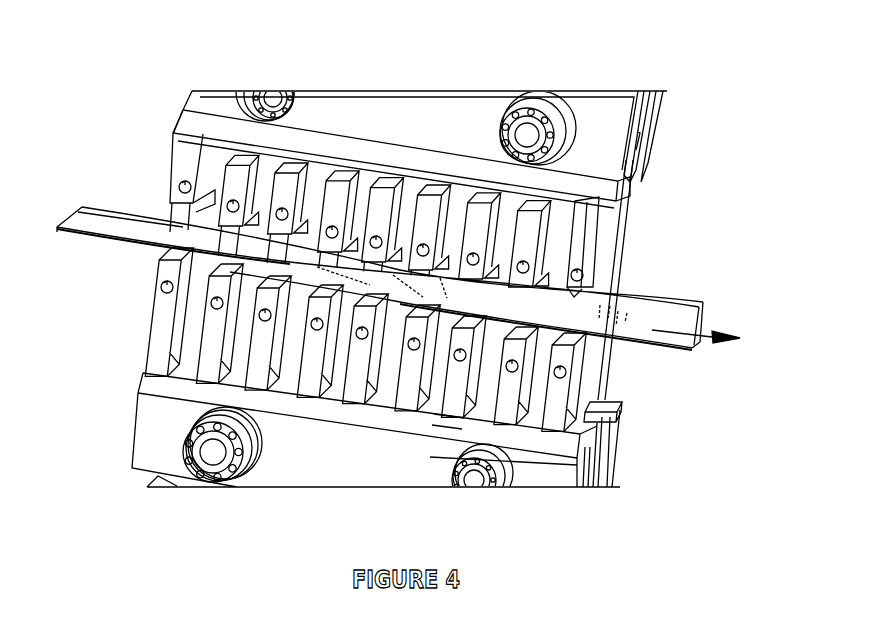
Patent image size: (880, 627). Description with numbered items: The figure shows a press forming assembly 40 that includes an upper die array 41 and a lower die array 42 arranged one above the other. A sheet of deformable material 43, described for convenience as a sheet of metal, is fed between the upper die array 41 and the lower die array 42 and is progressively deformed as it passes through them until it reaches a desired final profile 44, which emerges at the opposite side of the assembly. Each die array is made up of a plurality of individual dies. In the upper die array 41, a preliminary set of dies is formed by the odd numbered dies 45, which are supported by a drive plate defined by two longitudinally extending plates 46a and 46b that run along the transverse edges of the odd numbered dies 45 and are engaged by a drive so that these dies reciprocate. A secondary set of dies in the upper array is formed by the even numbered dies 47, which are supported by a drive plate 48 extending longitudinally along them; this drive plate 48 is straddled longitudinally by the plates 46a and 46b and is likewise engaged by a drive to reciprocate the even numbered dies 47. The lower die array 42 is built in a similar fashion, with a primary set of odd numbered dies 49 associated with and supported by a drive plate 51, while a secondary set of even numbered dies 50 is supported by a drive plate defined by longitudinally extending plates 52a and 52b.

The press forming assembly 40 is at (676, 489).
The upper die array 41 is at (661, 242).
The lower die array 42 is at (128, 313).
The sheet of deformable material 43 is at (112, 213).
The final profile 44 is at (672, 343).
The odd numbered dies 45 is at (190, 158).
The longitudinally extending plate 46a is at (646, 174).
The longitudinally extending plate 46b is at (652, 147).
The even numbered dies 47 is at (240, 167).
The drive plate 48 is at (641, 128).
The odd numbered dies 49 is at (355, 385).
The even numbered dies 50 is at (192, 384).
The drive plate 51 is at (598, 433).
The longitudinally extending plate 52a is at (440, 428).
The longitudinally extending plate 52b is at (622, 408).